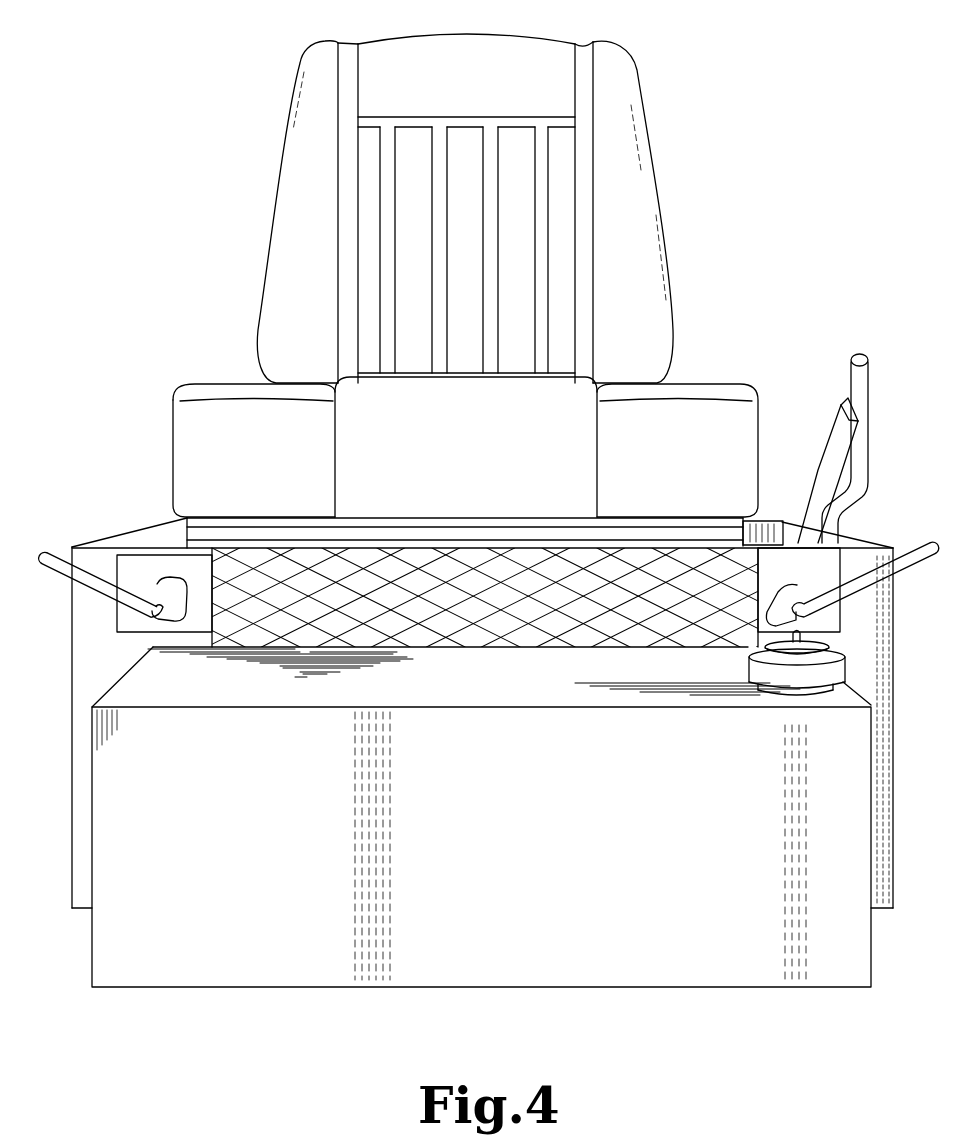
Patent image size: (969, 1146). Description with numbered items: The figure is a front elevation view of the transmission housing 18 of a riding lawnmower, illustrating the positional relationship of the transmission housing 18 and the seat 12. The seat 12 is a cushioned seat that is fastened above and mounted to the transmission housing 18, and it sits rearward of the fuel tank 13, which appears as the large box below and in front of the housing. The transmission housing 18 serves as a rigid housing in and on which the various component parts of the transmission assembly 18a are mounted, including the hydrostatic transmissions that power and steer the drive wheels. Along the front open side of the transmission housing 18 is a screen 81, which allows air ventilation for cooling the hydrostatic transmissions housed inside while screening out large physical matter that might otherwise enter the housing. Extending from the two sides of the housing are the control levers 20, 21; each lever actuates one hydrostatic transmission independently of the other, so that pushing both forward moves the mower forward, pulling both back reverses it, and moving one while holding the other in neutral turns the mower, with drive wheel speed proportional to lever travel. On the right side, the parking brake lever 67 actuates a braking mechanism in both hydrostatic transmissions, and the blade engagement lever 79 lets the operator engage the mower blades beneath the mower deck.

The seat 12 is at (645, 163).
The fuel tank 13 is at (451, 815).
The transmission housing 18 is at (200, 572).
The transmission assembly 18a is at (166, 494).
The control lever 20 is at (49, 552).
The control lever 21 is at (911, 546).
The parking brake lever 67 is at (835, 423).
The blade engagement lever 79 is at (871, 379).
The screen 81 is at (448, 648).